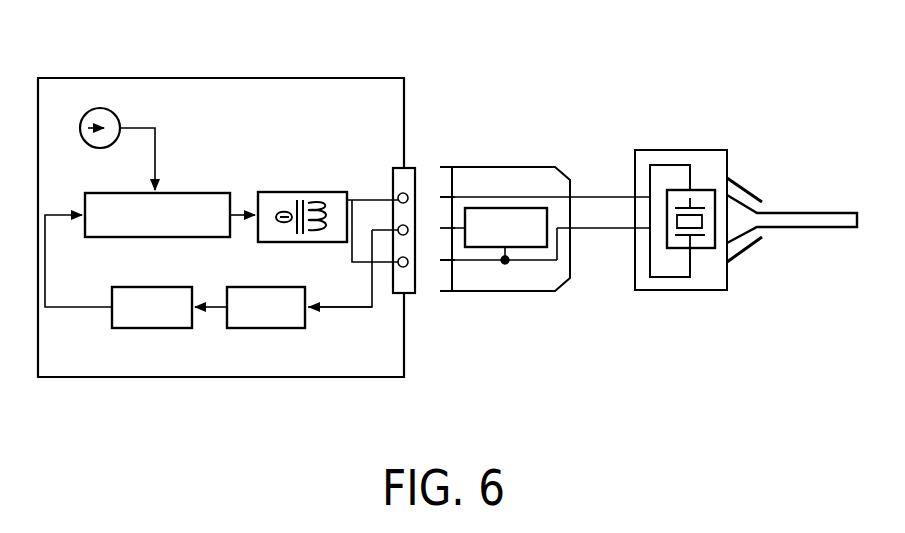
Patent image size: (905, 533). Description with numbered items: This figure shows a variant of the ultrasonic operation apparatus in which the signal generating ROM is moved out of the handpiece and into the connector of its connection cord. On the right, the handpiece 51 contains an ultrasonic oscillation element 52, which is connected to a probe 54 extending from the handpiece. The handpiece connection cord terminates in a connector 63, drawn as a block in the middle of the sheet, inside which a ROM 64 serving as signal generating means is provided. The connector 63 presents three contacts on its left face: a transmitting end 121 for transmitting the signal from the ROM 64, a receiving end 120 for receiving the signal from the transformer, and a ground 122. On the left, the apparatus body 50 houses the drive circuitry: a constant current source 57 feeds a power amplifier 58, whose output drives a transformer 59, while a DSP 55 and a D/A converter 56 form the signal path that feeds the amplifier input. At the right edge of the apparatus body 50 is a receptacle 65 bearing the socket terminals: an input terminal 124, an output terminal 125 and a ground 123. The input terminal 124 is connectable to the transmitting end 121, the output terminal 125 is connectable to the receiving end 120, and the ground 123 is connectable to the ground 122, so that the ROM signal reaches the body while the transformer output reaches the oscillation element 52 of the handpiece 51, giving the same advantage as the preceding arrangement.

The apparatus body 50 is at (303, 78).
The handpiece 51 is at (663, 150).
The ultrasonic oscillation element 52 is at (703, 250).
The probe 54 is at (828, 212).
The DSP 55 is at (242, 330).
The D/A converter 56 is at (110, 330).
The constant current source 57 is at (120, 118).
The power amplifier 58 is at (186, 193).
The transformer 59 is at (277, 192).
The connector 63 is at (536, 167).
The ROM 64 is at (557, 253).
The connector receptacle 65 is at (413, 168).
The receiving end 120 is at (444, 192).
The transmitting end 121 is at (444, 226).
The ground 122 is at (443, 263).
The ground 123 is at (405, 268).
The input terminal 124 is at (398, 230).
The output terminal 125 is at (398, 195).